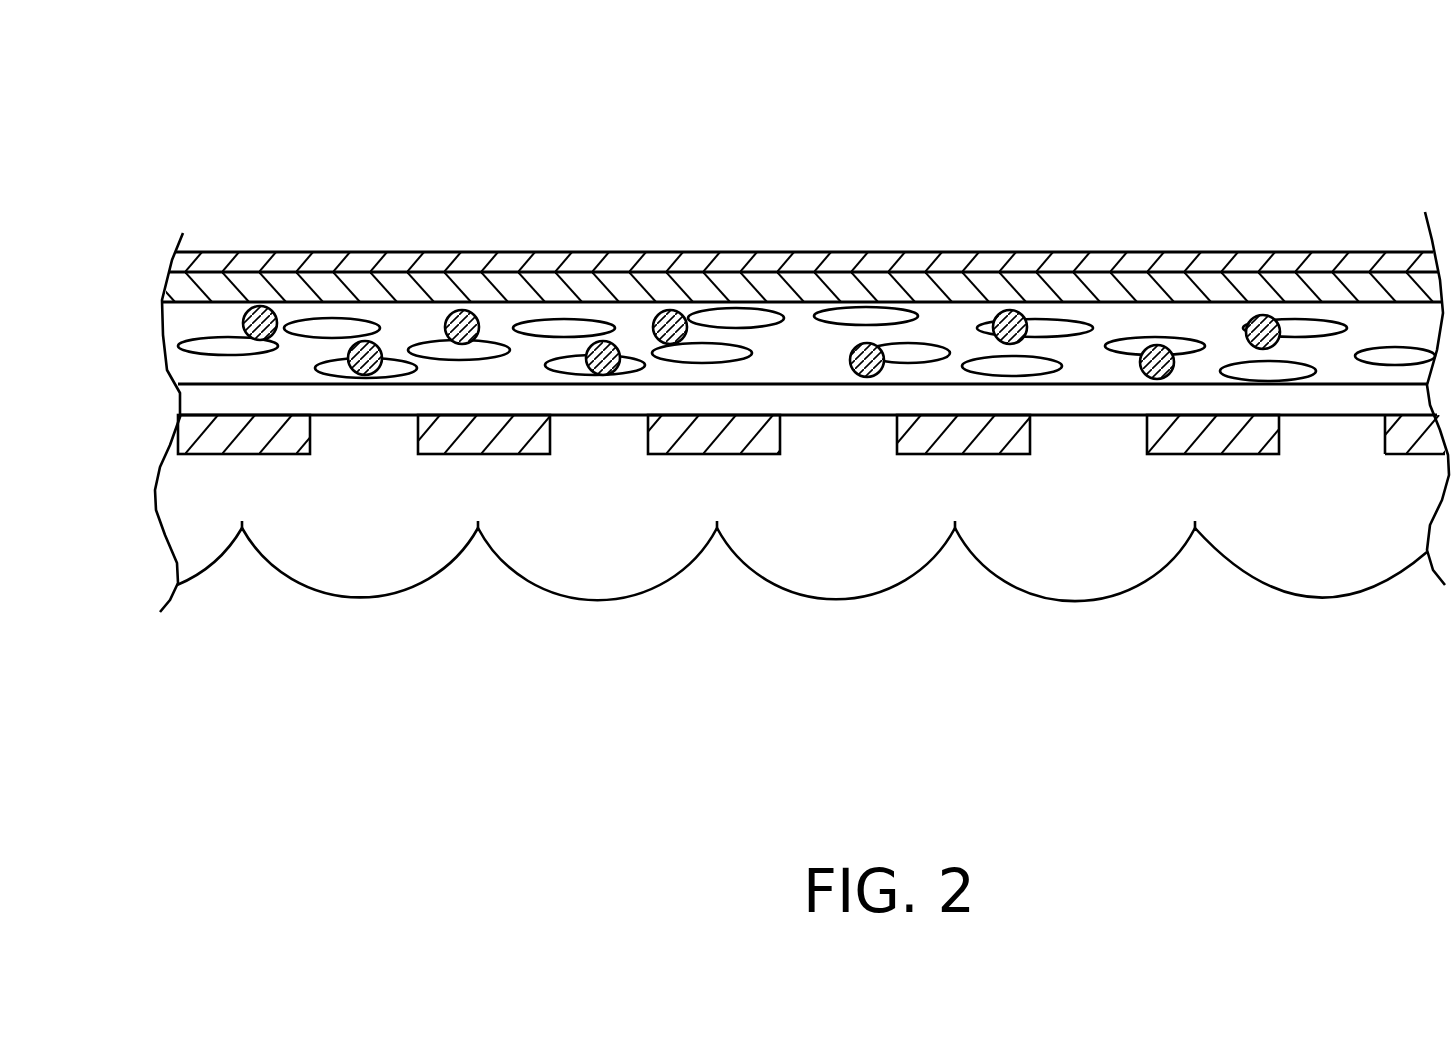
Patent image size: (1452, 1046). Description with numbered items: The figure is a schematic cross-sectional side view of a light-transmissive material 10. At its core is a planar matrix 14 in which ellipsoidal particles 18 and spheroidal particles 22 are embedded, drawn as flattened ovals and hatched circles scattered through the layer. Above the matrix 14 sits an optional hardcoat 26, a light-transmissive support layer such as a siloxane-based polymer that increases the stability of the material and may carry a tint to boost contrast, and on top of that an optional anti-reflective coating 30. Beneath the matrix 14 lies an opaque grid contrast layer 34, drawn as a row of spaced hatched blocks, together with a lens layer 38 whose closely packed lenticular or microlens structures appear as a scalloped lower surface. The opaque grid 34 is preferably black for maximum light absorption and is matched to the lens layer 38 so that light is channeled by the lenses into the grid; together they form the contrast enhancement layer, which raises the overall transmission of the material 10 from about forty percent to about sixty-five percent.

The light-transmissive material 10 is at (204, 81).
The planar matrix 14 is at (418, 323).
The ellipsoidal particles 18 is at (213, 340).
The spheroidal particles 22 is at (683, 317).
The hardcoat 26 is at (942, 288).
The anti-reflective coating 30 is at (1113, 262).
The opaque grid contrast layer 34 is at (1187, 455).
The lens layer 38 is at (192, 542).